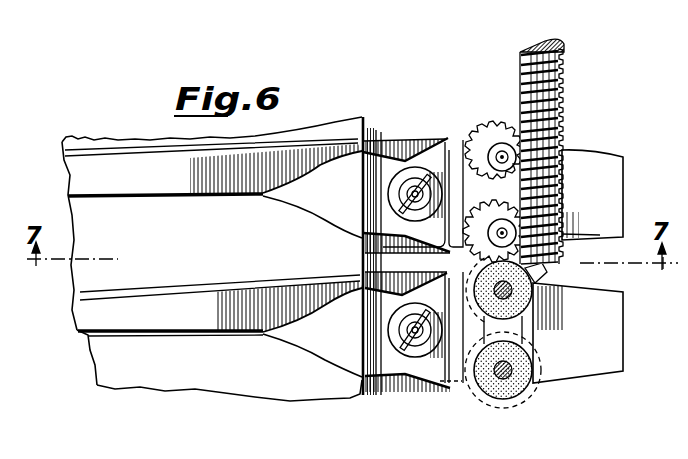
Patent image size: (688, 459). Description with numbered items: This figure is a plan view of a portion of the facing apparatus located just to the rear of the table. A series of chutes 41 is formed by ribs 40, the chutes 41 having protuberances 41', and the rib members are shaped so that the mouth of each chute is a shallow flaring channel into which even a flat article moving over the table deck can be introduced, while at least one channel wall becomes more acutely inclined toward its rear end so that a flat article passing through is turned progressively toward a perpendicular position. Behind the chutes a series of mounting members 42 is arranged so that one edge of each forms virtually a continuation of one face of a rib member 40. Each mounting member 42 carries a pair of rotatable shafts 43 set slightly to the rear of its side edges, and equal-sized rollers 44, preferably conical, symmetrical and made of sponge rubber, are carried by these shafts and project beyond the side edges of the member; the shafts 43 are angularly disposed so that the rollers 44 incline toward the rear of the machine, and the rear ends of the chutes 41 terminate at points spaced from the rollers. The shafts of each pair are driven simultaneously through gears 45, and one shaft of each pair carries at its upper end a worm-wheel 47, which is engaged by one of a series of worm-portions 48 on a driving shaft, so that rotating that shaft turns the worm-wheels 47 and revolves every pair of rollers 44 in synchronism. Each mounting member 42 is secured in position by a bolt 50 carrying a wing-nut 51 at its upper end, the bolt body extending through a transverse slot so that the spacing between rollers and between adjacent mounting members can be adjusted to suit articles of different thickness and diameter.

The rib 40 is at (228, 341).
The chute 41 is at (212, 223).
The protuberance 41' is at (390, 256).
The mounting member 42 is at (578, 266).
The rotatable shaft 43 is at (531, 282).
The roller 44 is at (533, 296).
The gear 45 is at (484, 214).
The worm-wheel 47 is at (503, 155).
The worm-portion 48 is at (563, 150).
The bolt 50 is at (416, 190).
The wing-nut 51 is at (433, 178).